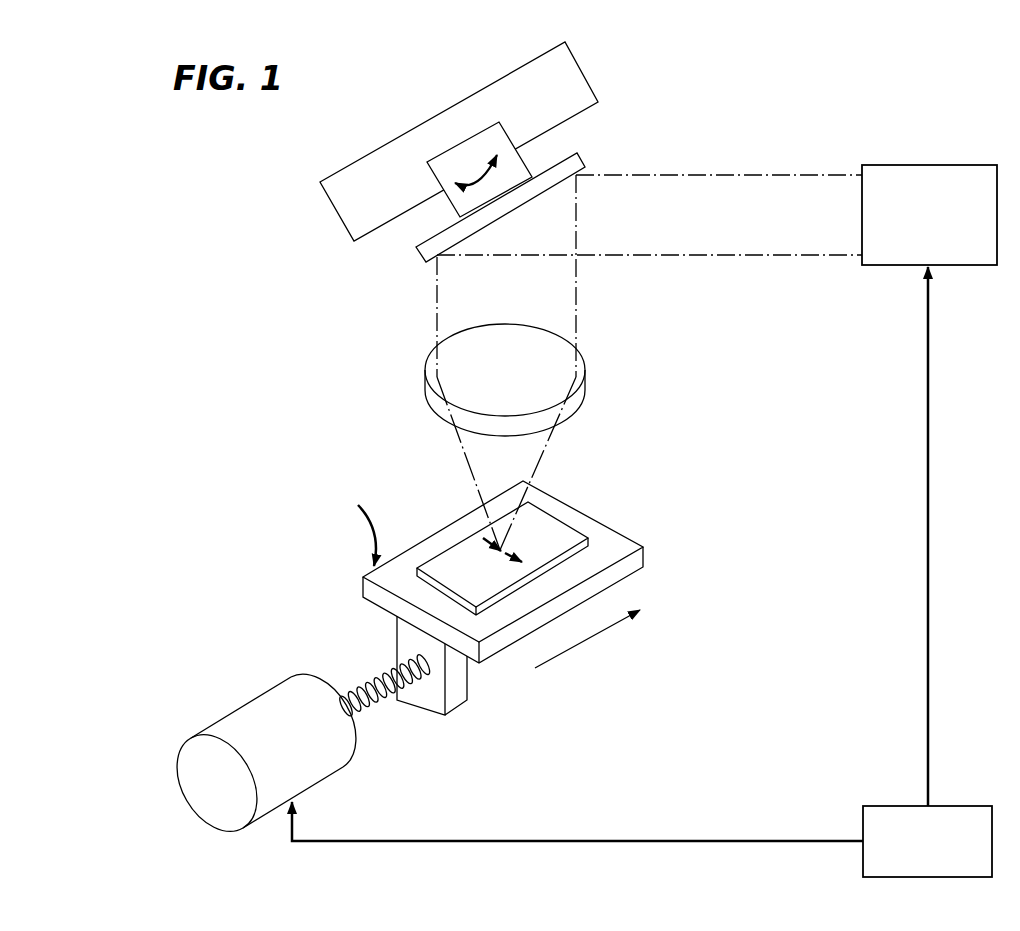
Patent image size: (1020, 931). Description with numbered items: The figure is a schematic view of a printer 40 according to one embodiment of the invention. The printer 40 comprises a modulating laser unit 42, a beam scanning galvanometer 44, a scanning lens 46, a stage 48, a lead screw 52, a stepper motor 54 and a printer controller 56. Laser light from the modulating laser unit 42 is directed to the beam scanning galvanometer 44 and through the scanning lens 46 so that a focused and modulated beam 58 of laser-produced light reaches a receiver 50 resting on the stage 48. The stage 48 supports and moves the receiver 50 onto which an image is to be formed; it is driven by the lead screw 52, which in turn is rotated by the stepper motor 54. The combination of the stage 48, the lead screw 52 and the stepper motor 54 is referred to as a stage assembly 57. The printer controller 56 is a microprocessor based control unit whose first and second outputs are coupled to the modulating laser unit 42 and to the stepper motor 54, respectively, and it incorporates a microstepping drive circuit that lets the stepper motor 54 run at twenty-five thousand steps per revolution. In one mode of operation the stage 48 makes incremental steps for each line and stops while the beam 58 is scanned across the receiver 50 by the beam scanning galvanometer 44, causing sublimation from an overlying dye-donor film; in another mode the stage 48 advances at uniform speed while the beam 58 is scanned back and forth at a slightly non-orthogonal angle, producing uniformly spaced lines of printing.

The printer 40 is at (757, 123).
The modulating laser unit 42 is at (940, 165).
The beam scanning galvanometer 44 is at (481, 90).
The scanning lens 46 is at (583, 382).
The stage 48 is at (645, 558).
The receiver 50 is at (590, 538).
The lead screw 52 is at (367, 682).
The stepper motor 54 is at (247, 703).
The printer controller 56 is at (893, 806).
The stage assembly 57 is at (357, 526).
The beam 58 is at (538, 462).